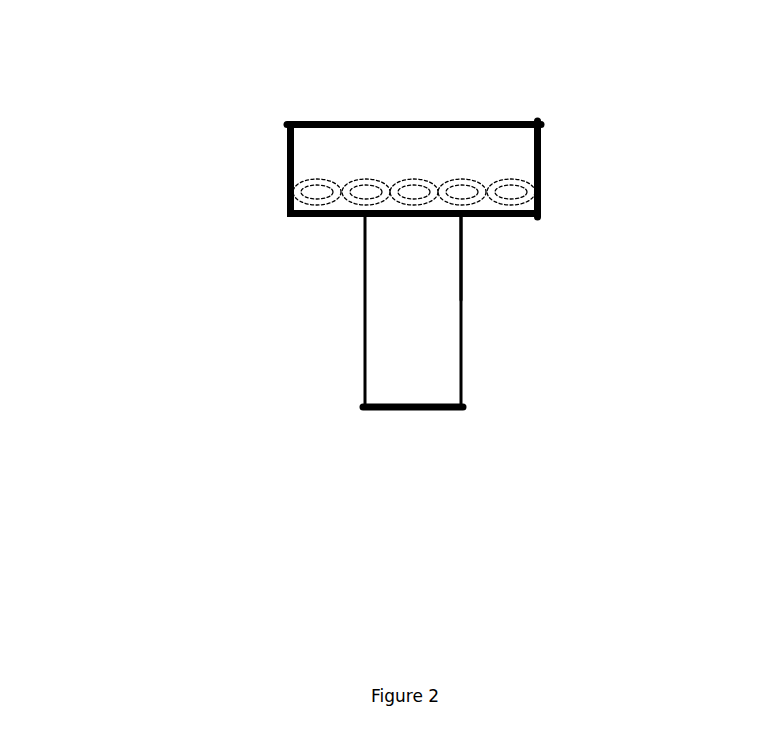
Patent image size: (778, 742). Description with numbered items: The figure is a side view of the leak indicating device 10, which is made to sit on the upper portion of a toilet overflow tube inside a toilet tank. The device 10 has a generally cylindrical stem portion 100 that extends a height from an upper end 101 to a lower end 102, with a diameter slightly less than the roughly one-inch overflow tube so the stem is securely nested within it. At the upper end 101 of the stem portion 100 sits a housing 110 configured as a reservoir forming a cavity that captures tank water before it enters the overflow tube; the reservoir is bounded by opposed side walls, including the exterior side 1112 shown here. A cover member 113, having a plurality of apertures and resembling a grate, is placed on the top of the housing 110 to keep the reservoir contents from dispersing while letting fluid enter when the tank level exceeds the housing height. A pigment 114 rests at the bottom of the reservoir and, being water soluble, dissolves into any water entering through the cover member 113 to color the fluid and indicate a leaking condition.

The leak indicating device 10 is at (153, 78).
The stem portion 100 is at (400, 300).
The upper end 101 is at (462, 218).
The lower end 102 is at (365, 408).
The housing 110 is at (283, 168).
The exterior side 1112 is at (540, 158).
The cover member 113 is at (535, 123).
The pigment 114 is at (300, 199).